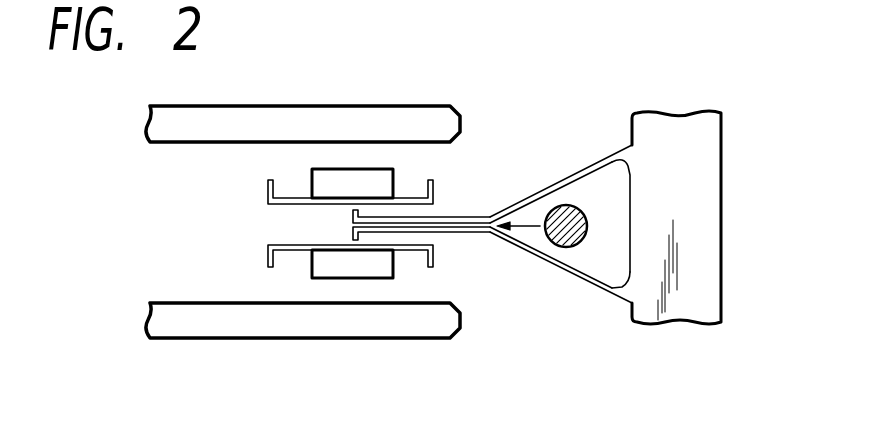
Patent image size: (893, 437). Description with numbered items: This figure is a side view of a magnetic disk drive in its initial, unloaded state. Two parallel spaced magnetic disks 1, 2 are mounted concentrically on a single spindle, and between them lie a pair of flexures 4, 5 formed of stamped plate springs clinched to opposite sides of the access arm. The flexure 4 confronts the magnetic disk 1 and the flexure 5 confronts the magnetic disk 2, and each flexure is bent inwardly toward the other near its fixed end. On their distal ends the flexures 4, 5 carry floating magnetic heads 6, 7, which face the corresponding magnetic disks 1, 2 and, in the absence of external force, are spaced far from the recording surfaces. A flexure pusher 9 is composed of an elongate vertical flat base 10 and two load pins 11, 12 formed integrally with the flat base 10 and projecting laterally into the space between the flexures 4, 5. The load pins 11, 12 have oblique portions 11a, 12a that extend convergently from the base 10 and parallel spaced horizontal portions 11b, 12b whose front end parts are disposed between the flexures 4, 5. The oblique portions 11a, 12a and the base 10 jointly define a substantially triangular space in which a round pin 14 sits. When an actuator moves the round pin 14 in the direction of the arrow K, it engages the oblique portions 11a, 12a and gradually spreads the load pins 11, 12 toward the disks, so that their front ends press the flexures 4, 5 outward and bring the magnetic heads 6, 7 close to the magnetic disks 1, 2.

The magnetic disk 1 is at (258, 114).
The magnetic disk 2 is at (250, 330).
The flexure 4 is at (410, 199).
The flexure 5 is at (410, 254).
The floating magnetic head 6 is at (356, 172).
The floating magnetic head 7 is at (350, 273).
The flexure pusher 9 is at (724, 183).
The flat base 10 is at (712, 245).
The load pin 11 is at (577, 165).
The oblique portion 11a is at (523, 200).
The horizontal portion 11b is at (465, 212).
The load pin 12 is at (585, 281).
The oblique portion 12a is at (538, 256).
The horizontal portion 12b is at (462, 237).
The round pin 14 is at (587, 220).
The arrow K is at (540, 226).